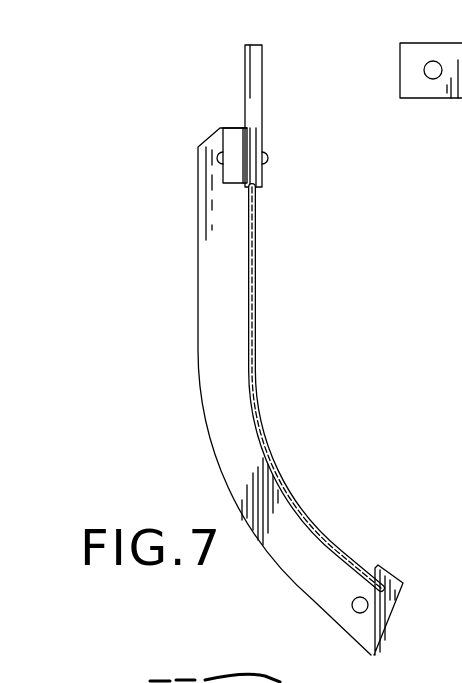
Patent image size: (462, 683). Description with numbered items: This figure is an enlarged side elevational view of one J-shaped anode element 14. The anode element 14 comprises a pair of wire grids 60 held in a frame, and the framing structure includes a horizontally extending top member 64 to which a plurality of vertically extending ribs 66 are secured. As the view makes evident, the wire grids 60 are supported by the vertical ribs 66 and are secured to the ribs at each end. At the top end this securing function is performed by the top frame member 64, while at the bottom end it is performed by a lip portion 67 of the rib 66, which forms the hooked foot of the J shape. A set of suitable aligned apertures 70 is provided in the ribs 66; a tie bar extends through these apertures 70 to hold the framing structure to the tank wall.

The anode element 14 is at (268, 256).
The wire grid 60 is at (309, 513).
The top member 64 is at (237, 143).
The rib 66 is at (212, 383).
The lip portion 67 is at (388, 575).
The aperture 70 is at (355, 607).